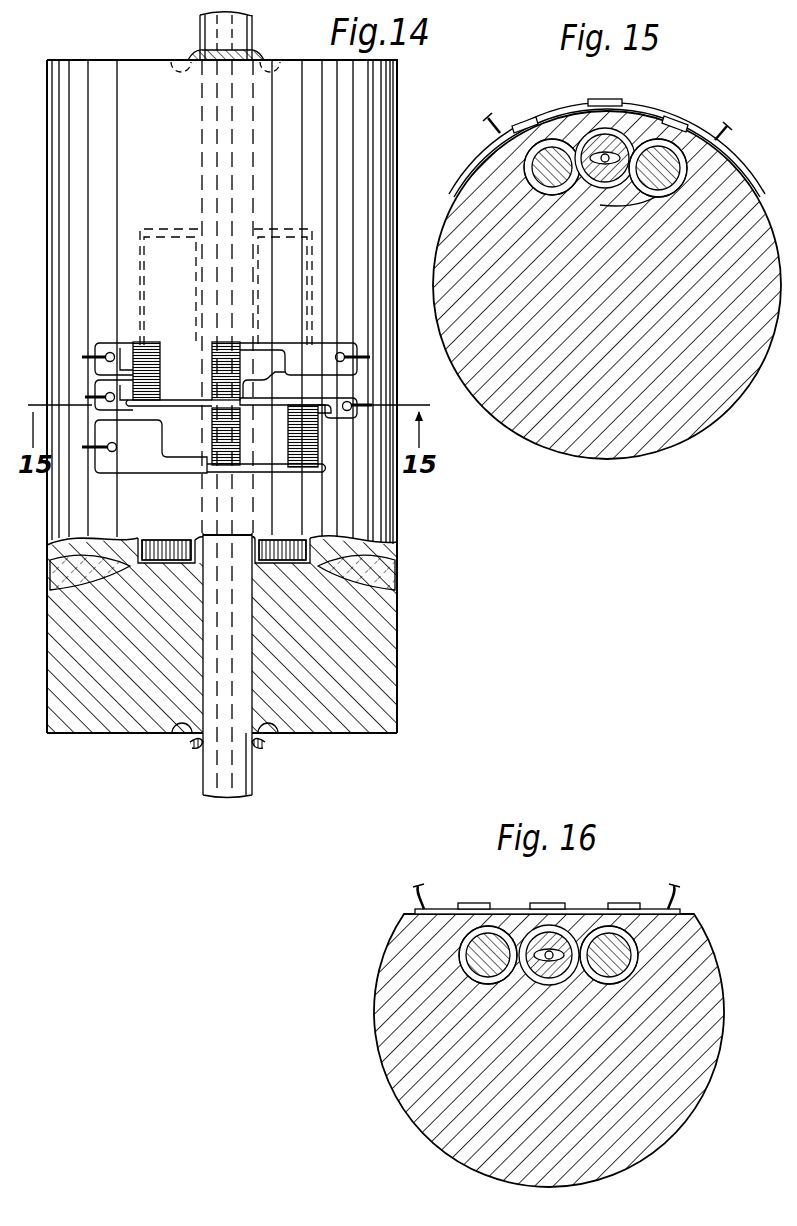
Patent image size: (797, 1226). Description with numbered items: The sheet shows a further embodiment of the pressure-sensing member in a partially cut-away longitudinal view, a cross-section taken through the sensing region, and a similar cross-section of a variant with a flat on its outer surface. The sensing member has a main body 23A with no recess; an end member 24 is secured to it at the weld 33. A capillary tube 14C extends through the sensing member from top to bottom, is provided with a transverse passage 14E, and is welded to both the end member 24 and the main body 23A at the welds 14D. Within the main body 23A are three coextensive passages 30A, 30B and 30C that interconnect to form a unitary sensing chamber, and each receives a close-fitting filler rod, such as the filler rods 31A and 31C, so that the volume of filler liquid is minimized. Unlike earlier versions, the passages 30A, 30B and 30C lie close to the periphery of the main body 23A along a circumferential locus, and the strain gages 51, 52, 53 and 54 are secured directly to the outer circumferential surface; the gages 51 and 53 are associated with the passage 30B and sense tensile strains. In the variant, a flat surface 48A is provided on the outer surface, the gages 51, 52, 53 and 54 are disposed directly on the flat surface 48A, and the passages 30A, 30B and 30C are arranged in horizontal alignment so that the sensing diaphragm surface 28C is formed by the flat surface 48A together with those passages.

In FIG. 14, the capillary tube 14C is at (203, 36).
In FIG. 15, the capillary tube 14C is at (618, 130).
In FIG. 16, the capillary tube 14C is at (532, 938).
In FIG. 14, the welds 14D is at (196, 56).
In FIG. 15, the transverse passage 14E is at (598, 150).
In FIG. 14, the main body 23A is at (400, 500).
In FIG. 15, the main body 23A is at (687, 454).
In FIG. 14, the end member 24 is at (154, 764).
In FIG. 16, the sensing diaphragm surface 28C is at (590, 904).
In FIG. 15, the passage 30A is at (527, 166).
In FIG. 16, the passage 30A is at (462, 940).
In FIG. 15, the passage 30B is at (580, 205).
In FIG. 16, the passage 30B is at (562, 982).
In FIG. 15, the passage 30C is at (680, 150).
In FIG. 16, the passage 30C is at (634, 964).
In FIG. 14, the filler rod 31A is at (166, 550).
In FIG. 15, the filler rod 31A is at (543, 190).
In FIG. 16, the filler rod 31A is at (470, 962).
In FIG. 14, the filler rod 31C is at (282, 550).
In FIG. 15, the filler rod 31C is at (686, 172).
In FIG. 16, the filler rod 31C is at (630, 942).
In FIG. 14, the weld 33 is at (400, 556).
In FIG. 16, the flat surface 48A is at (650, 910).
In FIG. 14, the strain gage 51 is at (238, 345).
In FIG. 14, the strain gage 52 is at (151, 340).
In FIG. 15, the strain gage 52 is at (526, 122).
In FIG. 16, the strain gage 52 is at (474, 902).
In FIG. 14, the strain gage 53 is at (220, 464).
In FIG. 15, the strain gage 53 is at (608, 98).
In FIG. 16, the strain gage 53 is at (550, 902).
In FIG. 14, the strain gage 54 is at (297, 468).
In FIG. 15, the strain gage 54 is at (688, 118).
In FIG. 16, the strain gage 54 is at (626, 902).